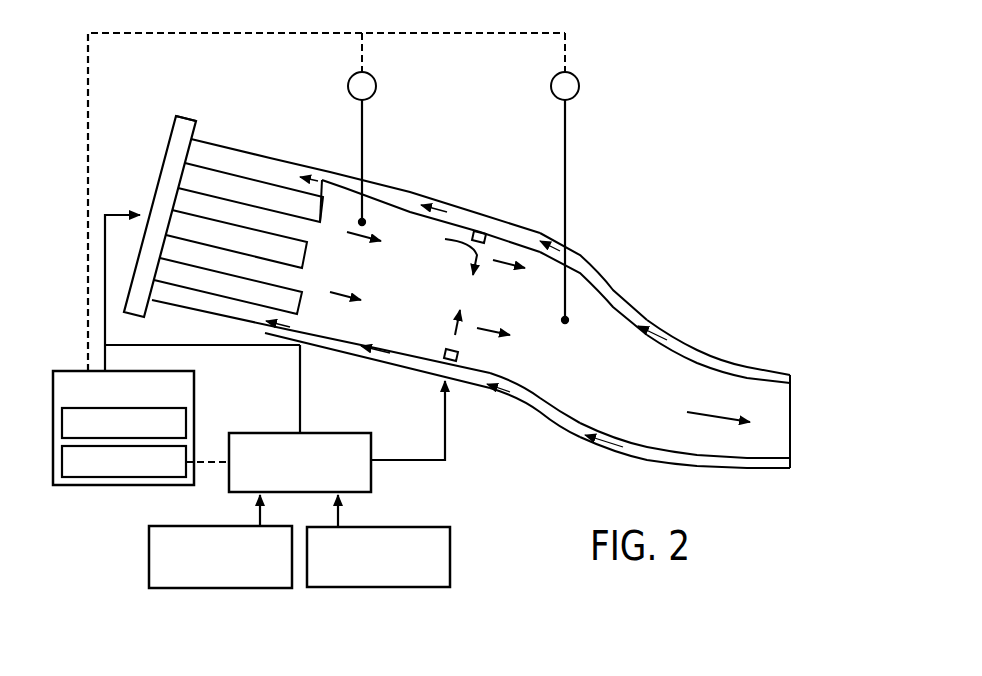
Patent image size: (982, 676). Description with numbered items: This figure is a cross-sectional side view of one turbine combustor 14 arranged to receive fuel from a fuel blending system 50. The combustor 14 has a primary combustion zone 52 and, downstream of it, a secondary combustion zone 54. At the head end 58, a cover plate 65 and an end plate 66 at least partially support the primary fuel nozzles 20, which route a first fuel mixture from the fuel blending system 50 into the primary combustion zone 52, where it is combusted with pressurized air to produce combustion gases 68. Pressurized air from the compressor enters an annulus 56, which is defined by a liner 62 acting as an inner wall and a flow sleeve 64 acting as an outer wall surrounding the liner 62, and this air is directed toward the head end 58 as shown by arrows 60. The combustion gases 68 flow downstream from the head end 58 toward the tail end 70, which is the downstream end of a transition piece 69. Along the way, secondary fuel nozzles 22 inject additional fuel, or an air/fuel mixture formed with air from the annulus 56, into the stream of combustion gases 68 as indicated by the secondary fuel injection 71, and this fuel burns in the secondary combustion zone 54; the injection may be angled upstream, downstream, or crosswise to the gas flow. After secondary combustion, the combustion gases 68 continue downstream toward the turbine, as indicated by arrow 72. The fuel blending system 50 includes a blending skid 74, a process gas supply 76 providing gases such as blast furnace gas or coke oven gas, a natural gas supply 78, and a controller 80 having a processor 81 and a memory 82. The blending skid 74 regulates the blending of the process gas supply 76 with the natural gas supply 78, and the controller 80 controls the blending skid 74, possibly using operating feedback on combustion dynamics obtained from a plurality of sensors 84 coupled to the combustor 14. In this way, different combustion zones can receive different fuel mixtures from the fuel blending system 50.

The combustor 14 is at (668, 97).
The primary fuel nozzles 20 is at (238, 227).
The secondary fuel nozzles 22 is at (486, 229).
The fuel blending system 50 is at (470, 502).
The primary combustion zone 52 is at (382, 227).
The secondary combustion zone 54 is at (583, 322).
The annulus 56 is at (622, 444).
The head end 58 is at (146, 165).
The arrows 60 is at (520, 402).
The liner 62 is at (373, 342).
The flow sleeve 64 is at (435, 197).
The cover plate 65 is at (292, 281).
The end plate 66 is at (187, 126).
The combustion gases 68 is at (343, 293).
The transition piece 69 is at (692, 321).
The tail end 70 is at (800, 402).
The secondary fuel injection 71 is at (452, 348).
The arrow 72 is at (713, 412).
The blending skid 74 is at (340, 432).
The process gas supply 76 is at (450, 556).
The natural gas supply 78 is at (149, 560).
The controller 80 is at (154, 457).
The processor 81 is at (125, 477).
The memory 82 is at (186, 422).
The sensors 84 is at (372, 76).